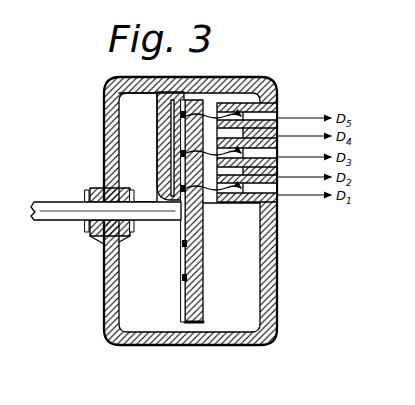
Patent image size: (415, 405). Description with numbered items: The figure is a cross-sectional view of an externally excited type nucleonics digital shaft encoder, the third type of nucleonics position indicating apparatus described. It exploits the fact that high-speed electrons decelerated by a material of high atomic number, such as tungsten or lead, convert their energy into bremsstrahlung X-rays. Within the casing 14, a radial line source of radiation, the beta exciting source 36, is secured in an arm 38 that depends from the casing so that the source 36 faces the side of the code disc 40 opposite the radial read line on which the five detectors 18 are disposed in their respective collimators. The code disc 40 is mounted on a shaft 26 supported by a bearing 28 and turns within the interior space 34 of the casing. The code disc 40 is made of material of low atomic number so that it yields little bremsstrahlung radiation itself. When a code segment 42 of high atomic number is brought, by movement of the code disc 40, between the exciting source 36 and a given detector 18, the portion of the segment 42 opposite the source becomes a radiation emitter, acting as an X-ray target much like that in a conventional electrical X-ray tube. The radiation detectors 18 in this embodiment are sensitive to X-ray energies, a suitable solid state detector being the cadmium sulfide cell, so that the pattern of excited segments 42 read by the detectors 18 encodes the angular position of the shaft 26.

The housing 14 is at (104, 126).
The detectors 18 is at (273, 125).
The shaft 26 is at (55, 201).
The bearing 28 is at (83, 225).
The cavity 34 is at (232, 207).
The beta exciting source 36 is at (182, 167).
The arm 38 is at (138, 147).
The code disc 40 is at (200, 299).
The code segment 42 is at (182, 244).